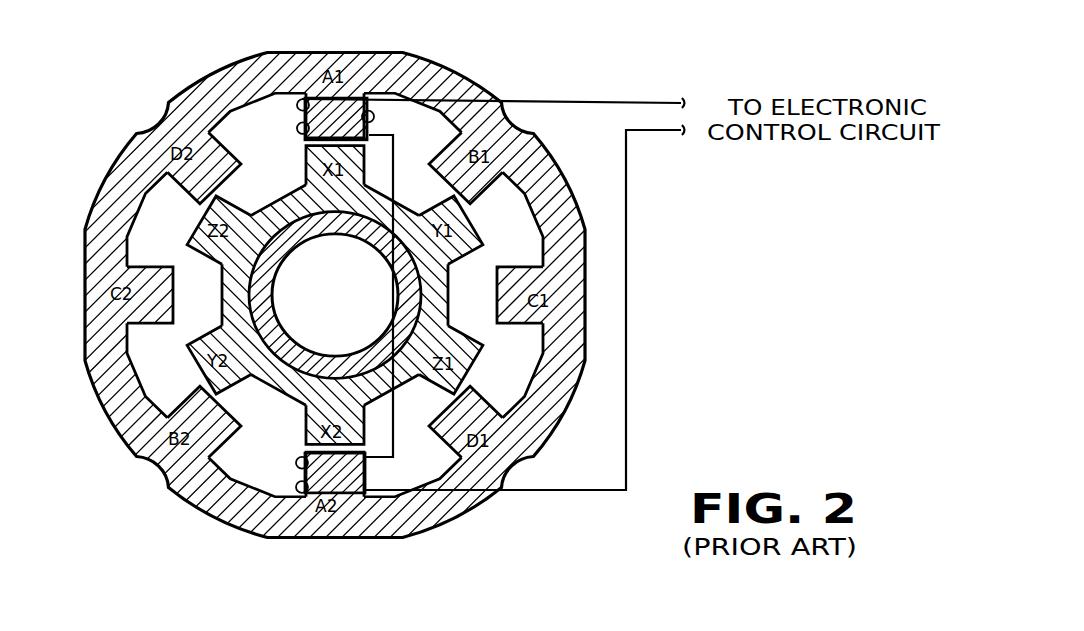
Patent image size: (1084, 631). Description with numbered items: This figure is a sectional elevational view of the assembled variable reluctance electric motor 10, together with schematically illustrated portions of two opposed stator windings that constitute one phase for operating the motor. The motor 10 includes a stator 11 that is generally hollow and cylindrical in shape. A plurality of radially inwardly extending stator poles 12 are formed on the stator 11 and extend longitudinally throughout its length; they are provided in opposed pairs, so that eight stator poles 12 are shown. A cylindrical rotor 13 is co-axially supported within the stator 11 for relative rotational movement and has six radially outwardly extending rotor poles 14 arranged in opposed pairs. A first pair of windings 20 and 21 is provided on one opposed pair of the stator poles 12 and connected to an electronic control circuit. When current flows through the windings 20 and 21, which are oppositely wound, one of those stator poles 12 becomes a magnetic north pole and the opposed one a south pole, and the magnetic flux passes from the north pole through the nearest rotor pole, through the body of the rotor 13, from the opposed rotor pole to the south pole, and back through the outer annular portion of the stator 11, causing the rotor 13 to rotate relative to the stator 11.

The variable reluctance electric motor 10 is at (131, 106).
The stator 11 is at (228, 86).
The stator poles 12 is at (143, 260).
The rotor 13 is at (326, 357).
The rotor poles 14 is at (188, 288).
The winding 20 is at (298, 104).
The winding 21 is at (296, 465).